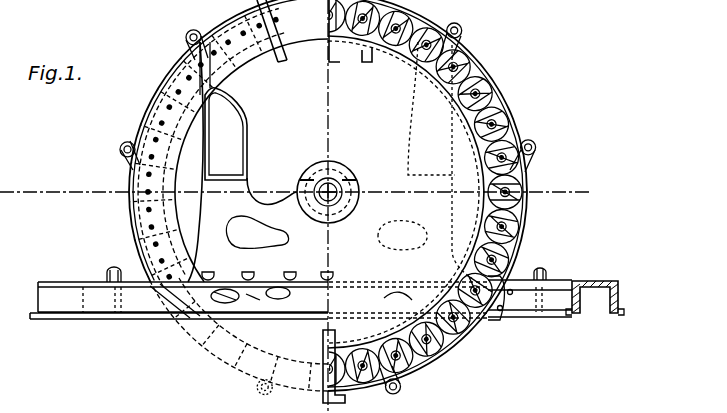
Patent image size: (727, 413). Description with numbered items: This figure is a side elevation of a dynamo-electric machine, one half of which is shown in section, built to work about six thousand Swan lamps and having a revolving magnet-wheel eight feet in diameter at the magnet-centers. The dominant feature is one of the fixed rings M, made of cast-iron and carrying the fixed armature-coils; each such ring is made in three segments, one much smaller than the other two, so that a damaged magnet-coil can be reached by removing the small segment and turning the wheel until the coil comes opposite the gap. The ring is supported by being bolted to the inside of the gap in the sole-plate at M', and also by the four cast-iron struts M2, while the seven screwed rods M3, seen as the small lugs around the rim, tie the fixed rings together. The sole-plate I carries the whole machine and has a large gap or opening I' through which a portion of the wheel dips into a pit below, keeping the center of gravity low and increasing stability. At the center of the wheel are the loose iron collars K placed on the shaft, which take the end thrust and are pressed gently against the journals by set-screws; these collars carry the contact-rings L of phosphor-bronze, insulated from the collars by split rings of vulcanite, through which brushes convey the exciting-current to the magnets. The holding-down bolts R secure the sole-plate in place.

The fixed rings M is at (331, 201).
The bolting points of fixed rings to sole-plate M' is at (272, 314).
The cast-iron struts M2 is at (217, 162).
The screwed rods M3 is at (465, 26).
The contact-rings L is at (334, 176).
The loose iron collars K is at (321, 206).
The sole-plate I is at (327, 290).
The gap or opening in the sole-plate I' is at (450, 298).
The holding-down bolts R is at (334, 268).